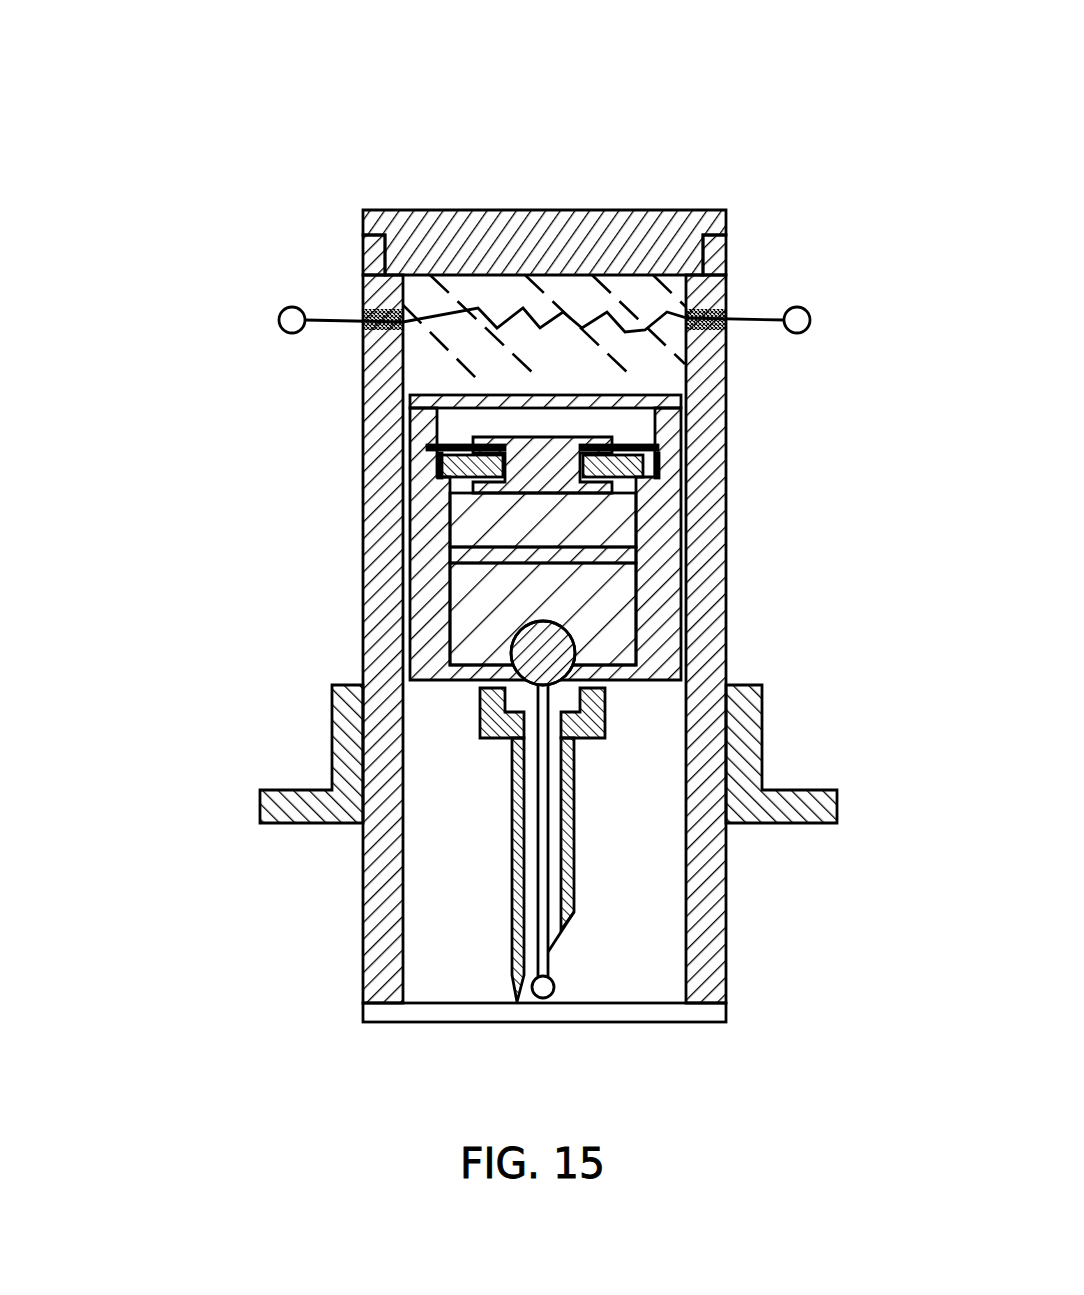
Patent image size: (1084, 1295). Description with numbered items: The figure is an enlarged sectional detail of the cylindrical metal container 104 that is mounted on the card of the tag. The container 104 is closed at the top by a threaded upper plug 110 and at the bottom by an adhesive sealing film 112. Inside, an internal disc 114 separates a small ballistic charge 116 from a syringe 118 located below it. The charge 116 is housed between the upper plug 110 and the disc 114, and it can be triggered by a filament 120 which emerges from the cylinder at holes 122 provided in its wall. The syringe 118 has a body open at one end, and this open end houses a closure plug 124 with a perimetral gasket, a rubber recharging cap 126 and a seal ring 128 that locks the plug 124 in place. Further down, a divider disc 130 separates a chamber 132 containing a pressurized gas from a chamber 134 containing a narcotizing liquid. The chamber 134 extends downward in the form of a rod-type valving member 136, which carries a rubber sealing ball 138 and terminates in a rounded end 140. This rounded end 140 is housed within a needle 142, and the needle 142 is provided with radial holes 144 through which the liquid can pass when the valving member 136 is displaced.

The cylindrical metal container 104 is at (770, 152).
The threaded upper plug 110 is at (540, 243).
The adhesive sealing film 112 is at (663, 1018).
The internal disc 114 is at (688, 397).
The ballistic charge 116 is at (430, 370).
The syringe 118 is at (643, 612).
The filament 120 is at (373, 208).
The holes 122 is at (726, 308).
The closure plug 124 is at (645, 468).
The rubber recharging cap 126 is at (462, 505).
The seal ring 128 is at (437, 448).
The divider disc 130 is at (452, 588).
The chamber 132 is at (462, 557).
The chamber 134 is at (610, 637).
The rod-type valving member 136 is at (570, 858).
The rubber sealing ball 138 is at (480, 707).
The rounded end 140 is at (552, 978).
The needle 142 is at (513, 862).
The radial holes 144 is at (513, 930).